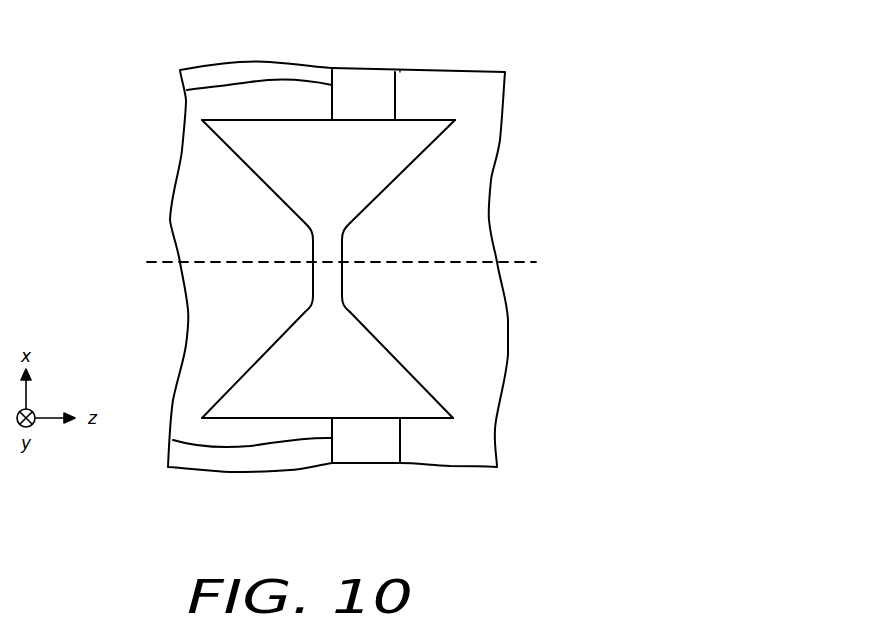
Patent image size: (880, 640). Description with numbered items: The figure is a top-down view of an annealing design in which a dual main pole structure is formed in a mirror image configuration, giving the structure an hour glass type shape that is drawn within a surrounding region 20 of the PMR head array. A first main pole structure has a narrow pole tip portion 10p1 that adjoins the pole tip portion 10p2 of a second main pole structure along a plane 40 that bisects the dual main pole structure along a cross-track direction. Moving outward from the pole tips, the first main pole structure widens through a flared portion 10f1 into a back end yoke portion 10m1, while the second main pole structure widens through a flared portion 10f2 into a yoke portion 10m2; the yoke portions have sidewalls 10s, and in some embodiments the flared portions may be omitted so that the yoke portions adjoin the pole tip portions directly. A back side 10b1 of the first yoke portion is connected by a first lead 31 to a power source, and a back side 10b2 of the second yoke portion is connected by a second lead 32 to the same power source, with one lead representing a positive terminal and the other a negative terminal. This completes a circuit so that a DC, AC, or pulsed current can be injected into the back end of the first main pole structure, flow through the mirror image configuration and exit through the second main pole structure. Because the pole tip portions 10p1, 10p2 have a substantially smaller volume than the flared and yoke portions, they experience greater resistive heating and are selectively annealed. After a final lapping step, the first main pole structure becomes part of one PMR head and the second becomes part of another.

The piezoelectric body / vibrating member 20 is at (487, 355).
The second lead 32 is at (188, 90).
The first lead 31 is at (173, 440).
The back side of second main pole structure 10b2 is at (395, 103).
The back side of first main pole structure 10b1 is at (400, 423).
The yoke portion of second main pole structure 10m2 is at (417, 137).
The yoke portion of first main pole structure 10m1 is at (395, 402).
The sidewalls 10s is at (243, 163).
The flared portion of second main pole structure 10f2 is at (335, 208).
The flared portion of first main pole structure 10f1 is at (322, 327).
The pole tip portion of second main pole structure 10p2 is at (330, 240).
The pole tip portion of first main pole structure 10p1 is at (330, 288).
The plane 40 is at (342, 263).